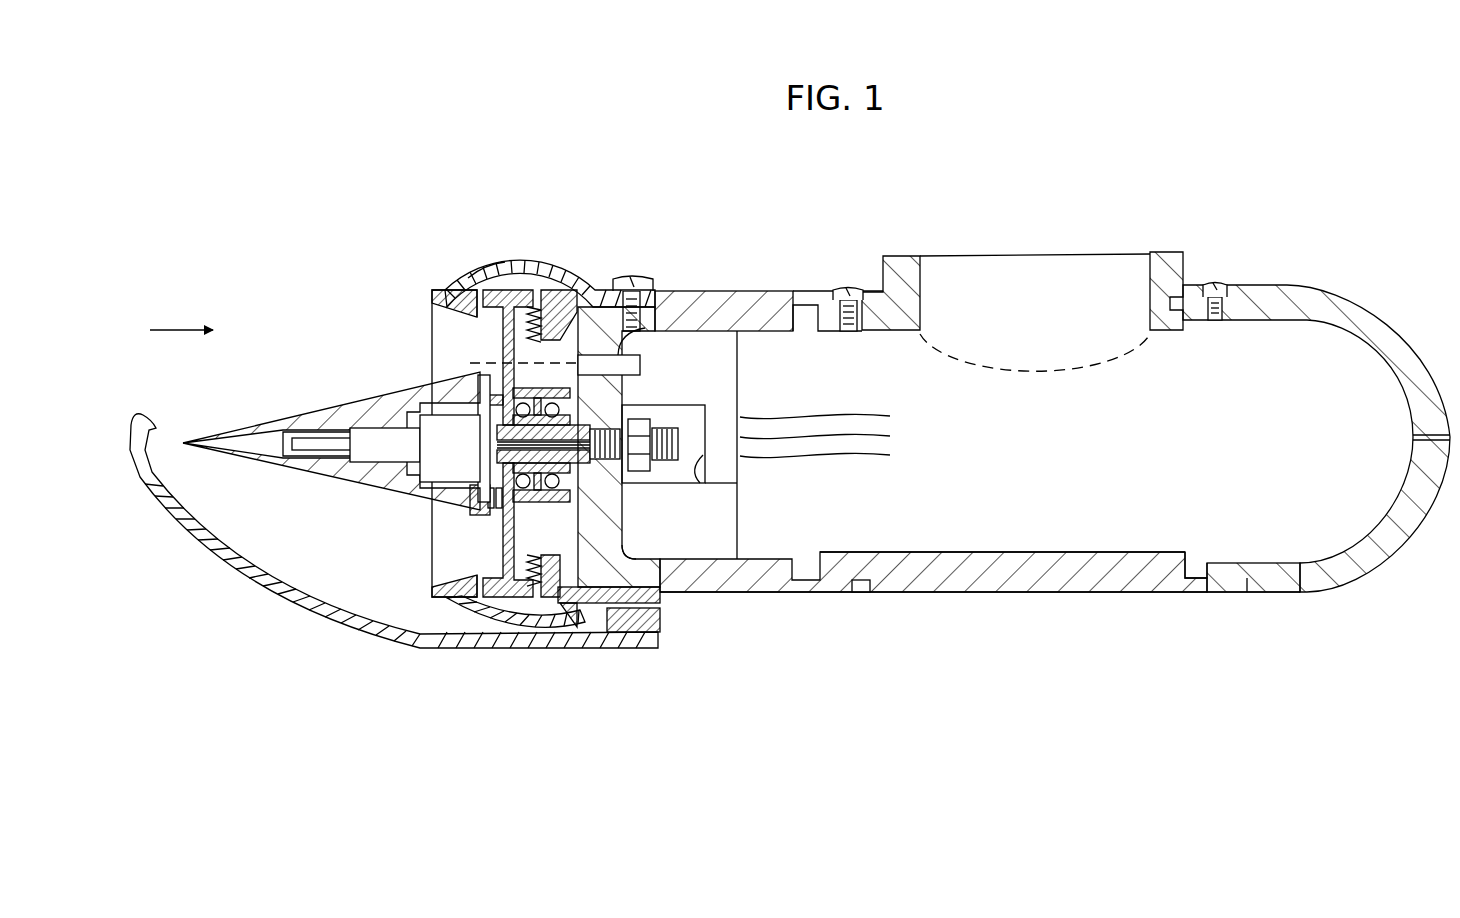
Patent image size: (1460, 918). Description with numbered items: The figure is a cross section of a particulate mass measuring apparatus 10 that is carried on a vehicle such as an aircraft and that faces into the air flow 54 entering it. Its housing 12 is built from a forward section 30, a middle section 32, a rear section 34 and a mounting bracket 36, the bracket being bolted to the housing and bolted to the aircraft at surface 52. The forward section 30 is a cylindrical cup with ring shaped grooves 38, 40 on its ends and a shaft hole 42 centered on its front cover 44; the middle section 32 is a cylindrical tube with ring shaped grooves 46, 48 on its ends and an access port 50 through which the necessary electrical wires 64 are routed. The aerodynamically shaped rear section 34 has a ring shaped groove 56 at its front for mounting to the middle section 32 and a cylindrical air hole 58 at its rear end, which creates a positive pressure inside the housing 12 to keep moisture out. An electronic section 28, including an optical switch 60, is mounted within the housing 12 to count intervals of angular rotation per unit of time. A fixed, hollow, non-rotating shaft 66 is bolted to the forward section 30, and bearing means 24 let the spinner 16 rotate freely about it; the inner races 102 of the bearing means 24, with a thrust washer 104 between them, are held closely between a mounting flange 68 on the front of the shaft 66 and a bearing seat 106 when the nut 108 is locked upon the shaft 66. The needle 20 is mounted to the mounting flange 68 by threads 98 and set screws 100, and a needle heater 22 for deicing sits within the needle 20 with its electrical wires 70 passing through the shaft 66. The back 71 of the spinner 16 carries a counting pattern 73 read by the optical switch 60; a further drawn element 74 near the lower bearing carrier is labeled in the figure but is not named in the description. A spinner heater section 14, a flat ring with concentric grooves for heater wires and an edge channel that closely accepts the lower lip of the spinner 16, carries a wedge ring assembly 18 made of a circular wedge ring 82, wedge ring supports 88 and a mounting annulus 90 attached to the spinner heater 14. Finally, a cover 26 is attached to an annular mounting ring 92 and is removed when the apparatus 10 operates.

The particulate mass measuring apparatus 10 is at (1240, 118).
The housing 12 is at (1093, 643).
The spinner heater section 14 is at (528, 264).
The spinner 16 is at (535, 630).
The wedge ring assembly 18 is at (535, 225).
The needle 20 is at (270, 425).
The needle heater 22 is at (430, 450).
The bearing means 24 is at (612, 420).
The cover 26 is at (340, 615).
The electronic section 28 is at (737, 470).
The forward section 30 is at (690, 292).
The middle section 32 is at (1125, 595).
The rear section 34 is at (1385, 560).
The mounting bracket 36 is at (1200, 263).
The ring shaped groove 38 is at (700, 603).
The ring shaped groove 40 is at (820, 575).
The shaft hole 42 is at (614, 418).
The front cover 44 is at (580, 622).
The ring shaped groove 46 is at (862, 590).
The ring shaped groove 48 is at (1195, 575).
The access port 50 is at (920, 307).
The surface 52 is at (1157, 255).
The air flow 54 is at (167, 330).
The ring shaped groove 56 is at (1245, 590).
The air hole 58 is at (1413, 437).
The optical switch 60 is at (680, 352).
The electrical wires 64 is at (805, 392).
The shaft 66 is at (708, 413).
The mounting flange 68 is at (478, 395).
The electrical wires 70 is at (700, 490).
The back 71 is at (545, 514).
The counting pattern 73 is at (505, 312).
The lower bearing carrier 74 is at (505, 575).
The wedge ring 82 is at (432, 300).
The wedge ring supports 88 is at (489, 268).
The mounting annulus 90 is at (628, 276).
The annular mounting ring 92 is at (662, 640).
The threads 98 is at (525, 560).
The set screws 100 is at (525, 350).
The inner races 102 is at (412, 494).
The thrust washer 104 is at (560, 513).
The bearing seat 106 is at (580, 482).
The nut 108 is at (700, 395).